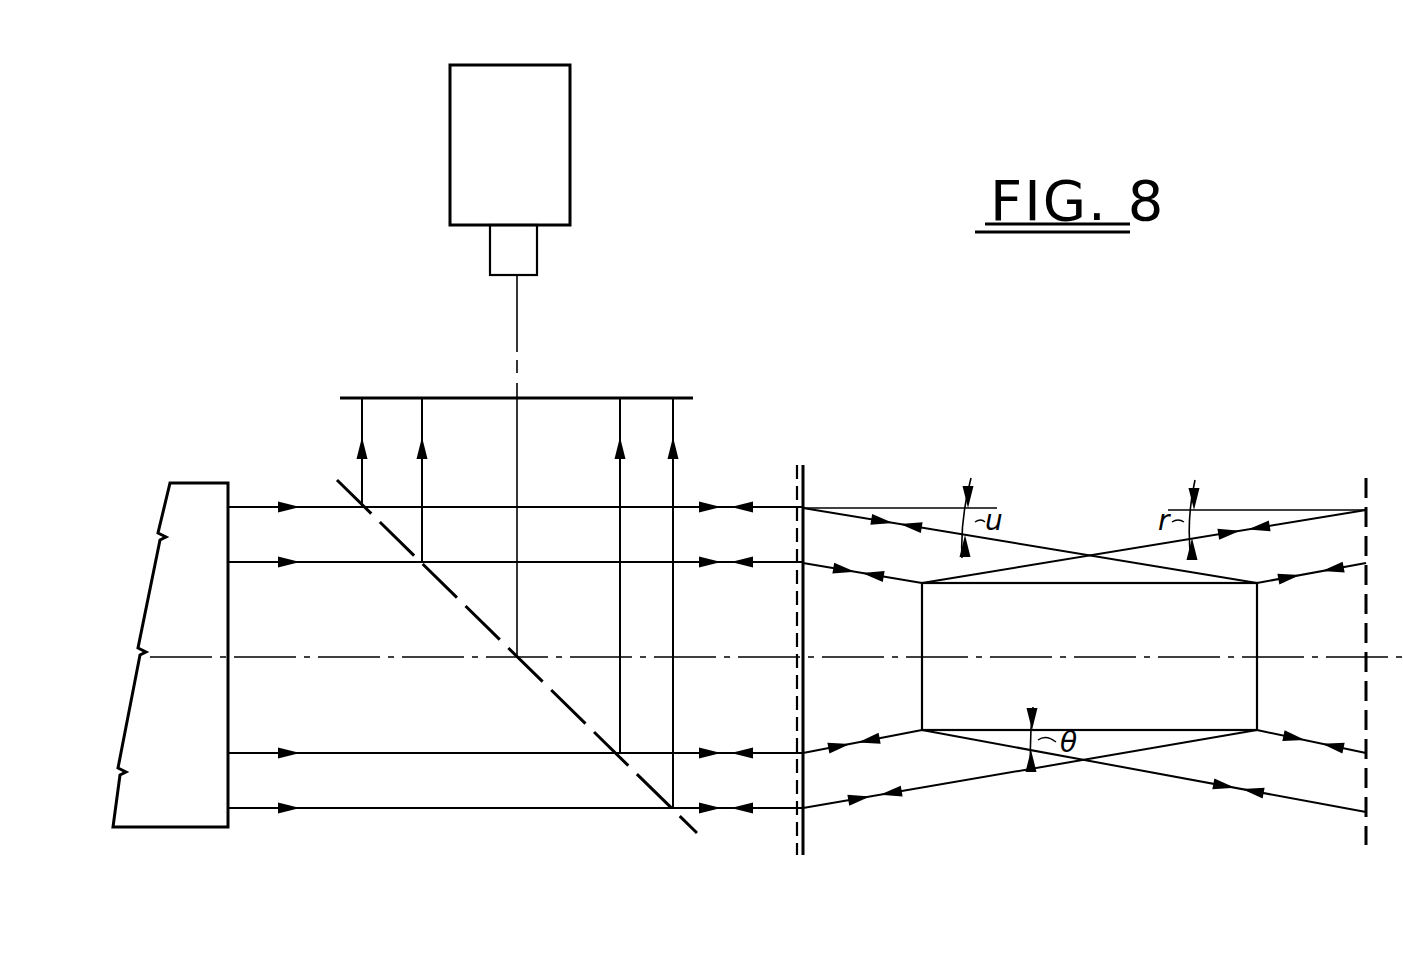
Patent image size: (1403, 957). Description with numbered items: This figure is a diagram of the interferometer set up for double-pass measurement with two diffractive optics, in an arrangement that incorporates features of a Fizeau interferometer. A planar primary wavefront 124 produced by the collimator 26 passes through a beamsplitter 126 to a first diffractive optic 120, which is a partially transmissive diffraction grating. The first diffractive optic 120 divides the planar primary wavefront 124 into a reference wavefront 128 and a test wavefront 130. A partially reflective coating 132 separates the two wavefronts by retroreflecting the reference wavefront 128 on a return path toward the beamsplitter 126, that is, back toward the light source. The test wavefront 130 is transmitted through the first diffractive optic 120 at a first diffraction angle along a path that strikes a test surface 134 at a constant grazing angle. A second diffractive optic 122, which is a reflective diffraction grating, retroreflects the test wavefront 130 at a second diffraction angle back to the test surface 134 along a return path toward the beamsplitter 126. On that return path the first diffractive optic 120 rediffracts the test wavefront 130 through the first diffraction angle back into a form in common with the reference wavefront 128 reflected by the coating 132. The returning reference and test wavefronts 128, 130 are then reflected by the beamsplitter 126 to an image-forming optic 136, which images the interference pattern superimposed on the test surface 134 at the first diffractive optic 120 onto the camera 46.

The collimator 26 is at (192, 494).
The camera 46 is at (530, 150).
The first diffractive optic 120 is at (800, 826).
The second diffractive optic 122 is at (1364, 841).
The planar primary wavefront 124 is at (238, 508).
The beamsplitter 126 is at (570, 710).
The reference wavefront 128 is at (760, 507).
The test wavefront 130 is at (814, 565).
The partially reflective coating 132 is at (805, 720).
The test surface 134 is at (1105, 585).
The image-forming optic 136 is at (642, 398).